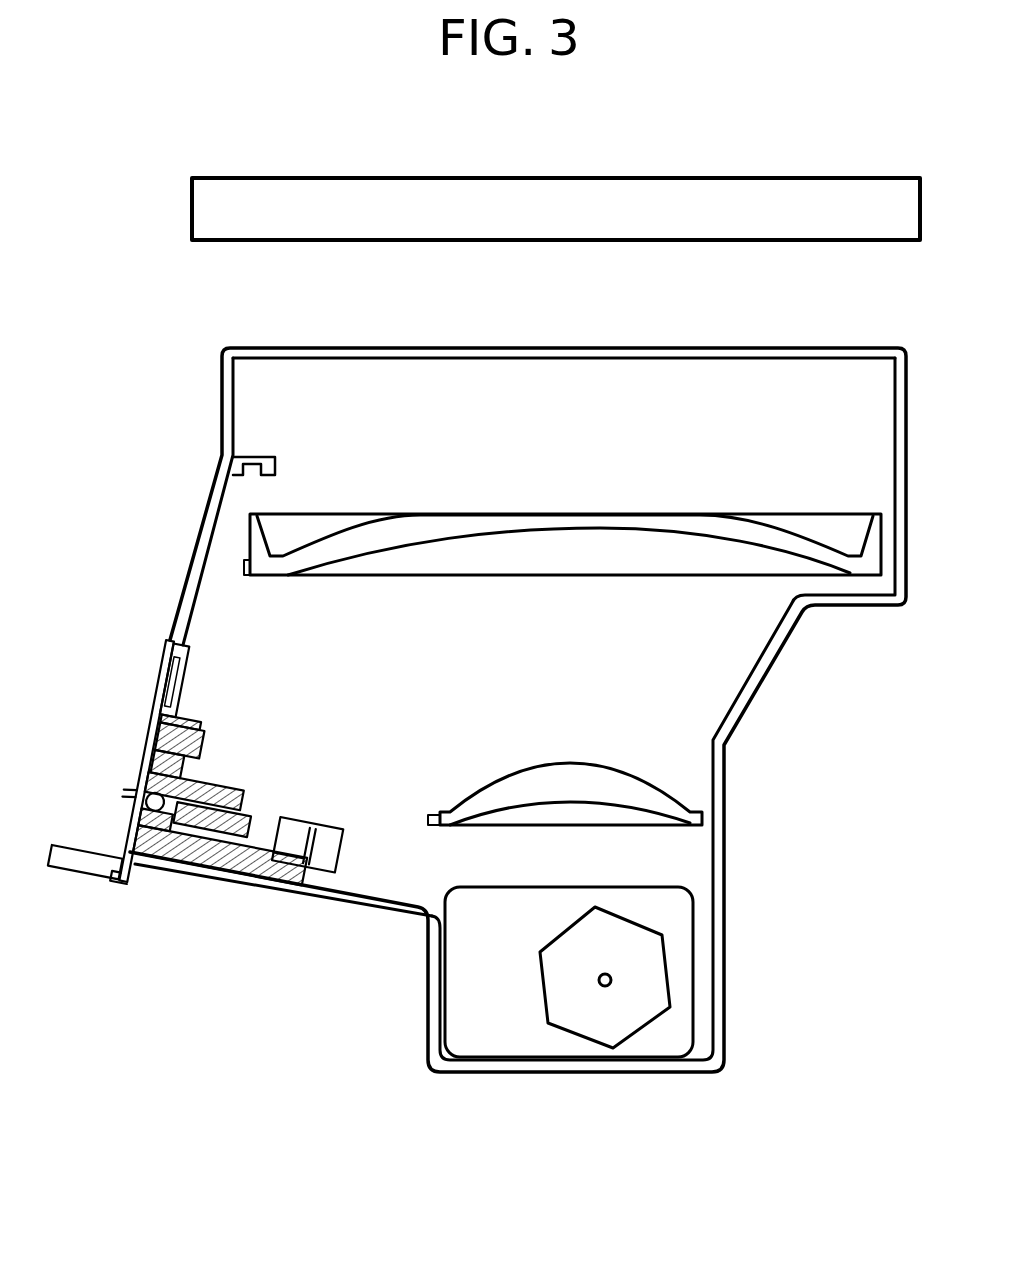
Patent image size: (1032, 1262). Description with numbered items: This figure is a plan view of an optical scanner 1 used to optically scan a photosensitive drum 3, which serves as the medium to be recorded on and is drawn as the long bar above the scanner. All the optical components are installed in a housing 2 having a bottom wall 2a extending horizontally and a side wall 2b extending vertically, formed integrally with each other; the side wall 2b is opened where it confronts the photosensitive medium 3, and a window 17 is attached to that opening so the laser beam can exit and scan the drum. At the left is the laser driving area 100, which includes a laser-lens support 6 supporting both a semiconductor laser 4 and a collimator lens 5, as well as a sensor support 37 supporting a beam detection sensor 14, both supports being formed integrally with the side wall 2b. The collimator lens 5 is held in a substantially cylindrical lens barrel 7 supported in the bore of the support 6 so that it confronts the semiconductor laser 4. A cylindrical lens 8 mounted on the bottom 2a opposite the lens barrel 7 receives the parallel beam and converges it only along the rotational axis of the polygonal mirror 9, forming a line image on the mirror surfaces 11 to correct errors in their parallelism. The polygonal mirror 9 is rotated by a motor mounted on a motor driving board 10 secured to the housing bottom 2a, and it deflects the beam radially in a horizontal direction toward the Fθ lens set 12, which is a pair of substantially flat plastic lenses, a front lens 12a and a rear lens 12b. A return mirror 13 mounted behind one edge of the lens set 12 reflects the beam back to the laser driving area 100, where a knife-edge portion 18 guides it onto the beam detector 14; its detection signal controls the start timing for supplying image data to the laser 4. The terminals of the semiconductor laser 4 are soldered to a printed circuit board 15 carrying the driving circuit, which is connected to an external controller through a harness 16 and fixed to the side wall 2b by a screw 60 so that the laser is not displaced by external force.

The optical scanner 1 is at (518, 687).
The housing 2 is at (518, 679).
The bottom wall 2a is at (382, 912).
The side wall 2b is at (727, 856).
The photosensitive drum 3 is at (861, 242).
The semiconductor laser 4 is at (140, 784).
The collimator lens 5 is at (188, 853).
The laser-lens support 6 is at (157, 872).
The lens barrel 7 is at (240, 890).
The cylindrical lens 8 is at (300, 880).
The polygonal mirror 9 is at (625, 930).
The motor driving board 10 is at (515, 915).
The mirror surfaces 11 is at (580, 920).
The Fθ lens set 12 is at (587, 669).
The front lens 12a is at (660, 802).
The rear lens 12b is at (818, 550).
The return mirror 13 is at (252, 457).
The beam detection sensor 14 is at (196, 740).
The printed circuit board 15 is at (150, 757).
The harness 16 is at (85, 888).
The window 17 is at (779, 348).
The knife-edge portion 18 is at (183, 725).
The sensor support 37 is at (147, 732).
The screw 60 is at (118, 823).
The laser driving area 100 is at (204, 812).